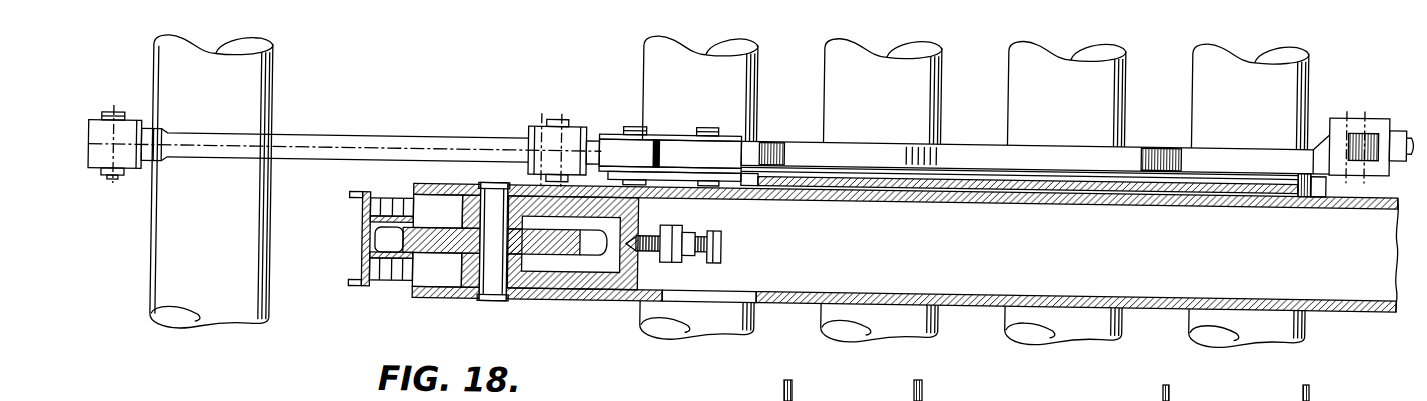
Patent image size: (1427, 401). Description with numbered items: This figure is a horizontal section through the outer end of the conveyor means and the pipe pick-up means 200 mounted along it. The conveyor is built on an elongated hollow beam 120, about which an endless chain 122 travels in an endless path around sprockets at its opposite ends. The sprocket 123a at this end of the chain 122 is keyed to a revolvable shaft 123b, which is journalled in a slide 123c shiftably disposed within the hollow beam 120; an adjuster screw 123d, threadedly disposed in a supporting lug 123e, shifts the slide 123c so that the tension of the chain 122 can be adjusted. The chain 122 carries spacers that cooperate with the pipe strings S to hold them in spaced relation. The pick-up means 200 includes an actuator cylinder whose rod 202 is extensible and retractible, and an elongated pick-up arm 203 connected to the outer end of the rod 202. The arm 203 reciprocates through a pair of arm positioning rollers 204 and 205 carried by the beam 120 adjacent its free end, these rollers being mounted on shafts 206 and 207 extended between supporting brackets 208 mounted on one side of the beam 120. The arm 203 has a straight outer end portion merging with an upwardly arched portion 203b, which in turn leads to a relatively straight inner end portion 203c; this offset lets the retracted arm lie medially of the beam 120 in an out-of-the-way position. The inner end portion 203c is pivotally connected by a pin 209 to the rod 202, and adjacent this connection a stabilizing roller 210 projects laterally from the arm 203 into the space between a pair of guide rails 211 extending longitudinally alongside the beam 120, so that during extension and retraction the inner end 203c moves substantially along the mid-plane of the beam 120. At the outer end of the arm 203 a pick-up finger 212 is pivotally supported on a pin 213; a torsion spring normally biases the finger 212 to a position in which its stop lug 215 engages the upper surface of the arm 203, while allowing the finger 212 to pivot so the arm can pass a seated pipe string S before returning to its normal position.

The hollow beam 120 is at (962, 299).
The endless chain 122 is at (363, 227).
The sprocket 123a is at (442, 242).
The revolvable shaft 123b is at (492, 283).
The slide 123c is at (587, 280).
The adjuster screw 123d is at (721, 239).
The supporting lug 123e is at (683, 222).
The pick-up means 200 is at (579, 79).
The rod 202 is at (1410, 130).
The pick-up arm 203 is at (370, 135).
The upwardly arched portion 203b is at (787, 128).
The inner end portion 203c is at (1175, 140).
The arm positioning roller 204 is at (615, 148).
The arm positioning roller 205 is at (724, 153).
The shaft 206 is at (630, 124).
The shaft 207 is at (707, 124).
The supporting bracket 208 is at (660, 135).
The pin 209 is at (1343, 117).
The stabilizing roller 210 is at (1303, 184).
The guide rail 211 is at (1010, 182).
The pick-up finger 212 is at (144, 176).
The pin 213 is at (112, 186).
The stop lug 215 is at (130, 127).
The pipe string S is at (230, 309).